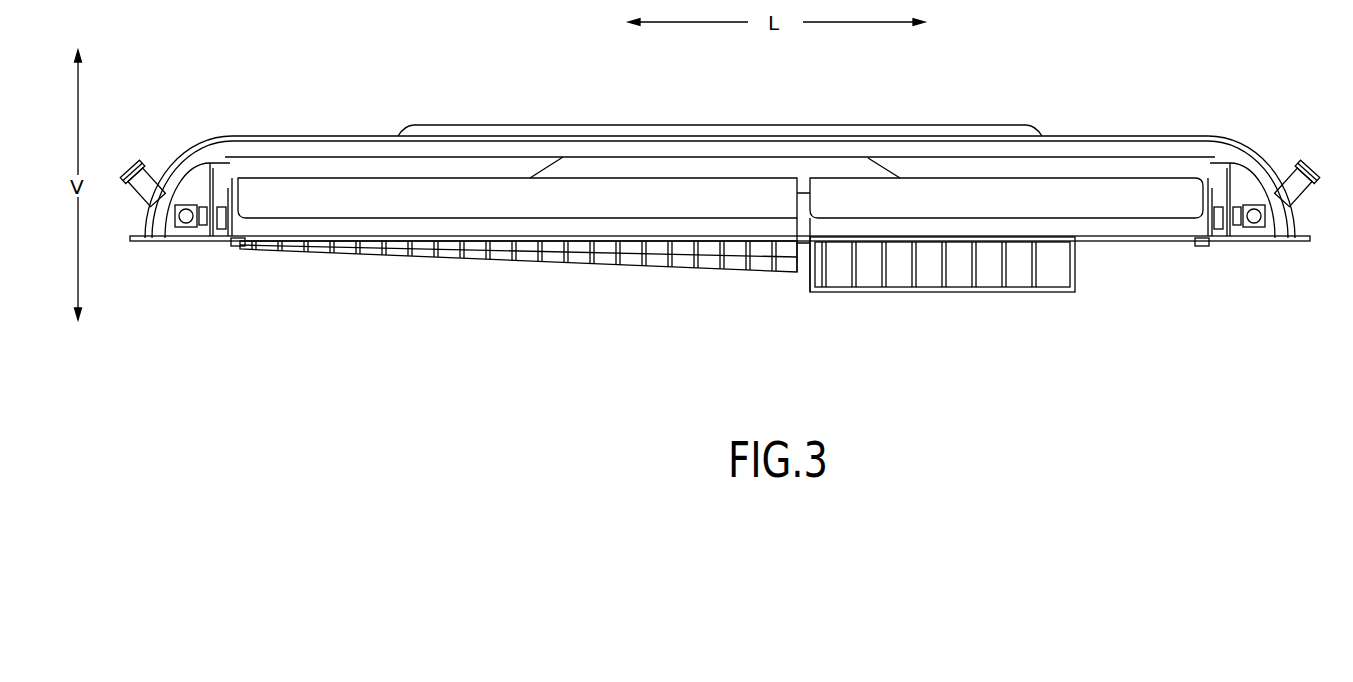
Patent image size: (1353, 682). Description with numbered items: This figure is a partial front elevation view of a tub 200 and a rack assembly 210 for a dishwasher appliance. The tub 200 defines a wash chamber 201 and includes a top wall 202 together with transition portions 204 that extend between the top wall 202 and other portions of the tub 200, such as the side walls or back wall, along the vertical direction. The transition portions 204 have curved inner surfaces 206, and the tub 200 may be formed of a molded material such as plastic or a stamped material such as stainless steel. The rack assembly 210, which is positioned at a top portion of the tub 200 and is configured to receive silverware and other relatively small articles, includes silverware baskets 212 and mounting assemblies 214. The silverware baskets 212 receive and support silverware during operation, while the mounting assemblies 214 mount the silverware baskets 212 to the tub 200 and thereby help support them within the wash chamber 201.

The tub 200 is at (1108, 135).
The wash chamber 201 is at (280, 187).
The top wall 202 is at (752, 128).
The transition portions 204 is at (183, 168).
The curved inner surfaces 206 is at (220, 166).
The rack assembly 210 is at (740, 277).
The silverware baskets 212 is at (490, 203).
The mounting assemblies 214 is at (188, 243).